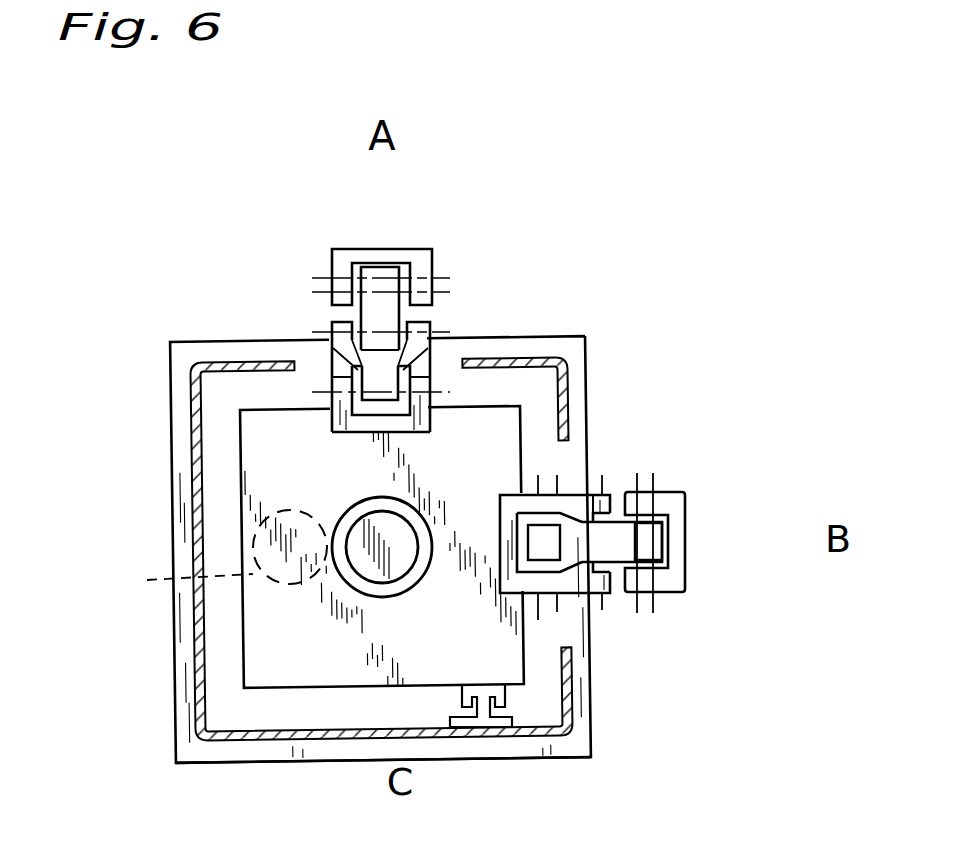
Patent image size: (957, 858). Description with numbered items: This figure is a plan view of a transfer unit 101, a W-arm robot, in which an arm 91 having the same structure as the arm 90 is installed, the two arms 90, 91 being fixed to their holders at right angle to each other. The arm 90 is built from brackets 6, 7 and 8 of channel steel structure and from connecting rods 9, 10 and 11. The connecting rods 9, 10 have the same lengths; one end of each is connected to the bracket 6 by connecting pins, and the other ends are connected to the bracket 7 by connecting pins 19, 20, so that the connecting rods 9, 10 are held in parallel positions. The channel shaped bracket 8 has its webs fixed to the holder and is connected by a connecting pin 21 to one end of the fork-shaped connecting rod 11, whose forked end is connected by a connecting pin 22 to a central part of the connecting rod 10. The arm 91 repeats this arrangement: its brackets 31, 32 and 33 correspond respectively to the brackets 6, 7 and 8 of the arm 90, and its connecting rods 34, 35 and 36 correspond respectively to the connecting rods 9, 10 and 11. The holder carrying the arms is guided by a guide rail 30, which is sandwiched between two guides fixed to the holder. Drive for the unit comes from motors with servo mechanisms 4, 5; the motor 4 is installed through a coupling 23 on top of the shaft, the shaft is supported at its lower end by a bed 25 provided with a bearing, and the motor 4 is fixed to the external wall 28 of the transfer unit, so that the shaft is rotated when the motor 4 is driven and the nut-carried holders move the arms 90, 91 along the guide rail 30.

The motor 4 is at (410, 573).
The motor 5 is at (184, 583).
The bracket 6 is at (570, 597).
The bracket 7 is at (675, 508).
The bracket 8 is at (513, 507).
The connecting rod 9 is at (660, 547).
The connecting rod 10 is at (615, 553).
The fork-shaped connecting rod 11 is at (593, 510).
The connecting pin 19 is at (640, 482).
The connecting pin 20 is at (648, 484).
The connecting pin 21 is at (538, 603).
The connecting pin 22 is at (600, 482).
The coupling 23 is at (355, 600).
The bed 25 is at (180, 420).
The external wall 28 is at (193, 492).
The guide rail 30 is at (473, 720).
The bracket 31 is at (330, 362).
The bracket 32 is at (432, 257).
The bracket 33 is at (345, 418).
The connecting rod 34 is at (385, 270).
The connecting rod 35 is at (397, 312).
The connecting rod 36 is at (420, 348).
The arm 90 is at (638, 528).
The arm 91 is at (394, 335).
The transfer unit 101 is at (705, 283).